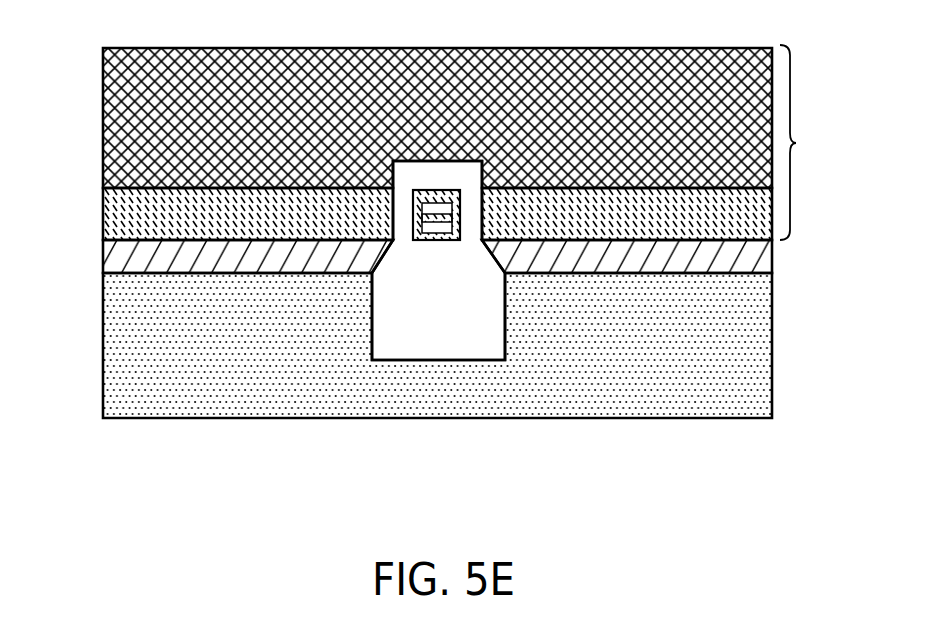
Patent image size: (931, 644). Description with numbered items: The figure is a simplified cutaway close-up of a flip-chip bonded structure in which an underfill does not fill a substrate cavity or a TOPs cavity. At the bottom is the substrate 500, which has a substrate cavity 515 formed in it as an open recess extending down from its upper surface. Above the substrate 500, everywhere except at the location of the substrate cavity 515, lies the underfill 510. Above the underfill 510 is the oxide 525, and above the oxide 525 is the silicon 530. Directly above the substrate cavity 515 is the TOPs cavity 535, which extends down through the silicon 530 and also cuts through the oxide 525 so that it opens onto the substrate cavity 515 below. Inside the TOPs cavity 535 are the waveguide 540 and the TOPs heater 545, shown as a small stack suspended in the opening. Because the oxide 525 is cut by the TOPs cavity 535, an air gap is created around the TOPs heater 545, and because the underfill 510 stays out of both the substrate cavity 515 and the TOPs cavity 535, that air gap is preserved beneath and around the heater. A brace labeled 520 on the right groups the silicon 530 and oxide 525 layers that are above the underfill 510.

The substrate 500 is at (118, 343).
The underfill 510 is at (118, 257).
The substrate cavity 515 is at (425, 345).
The dielectric stack 520 is at (810, 142).
The oxide 525 is at (118, 209).
The silicon 530 is at (117, 121).
The TOPs cavity 535 is at (452, 190).
The waveguide 540 is at (440, 203).
The TOPs heater 545 is at (427, 210).